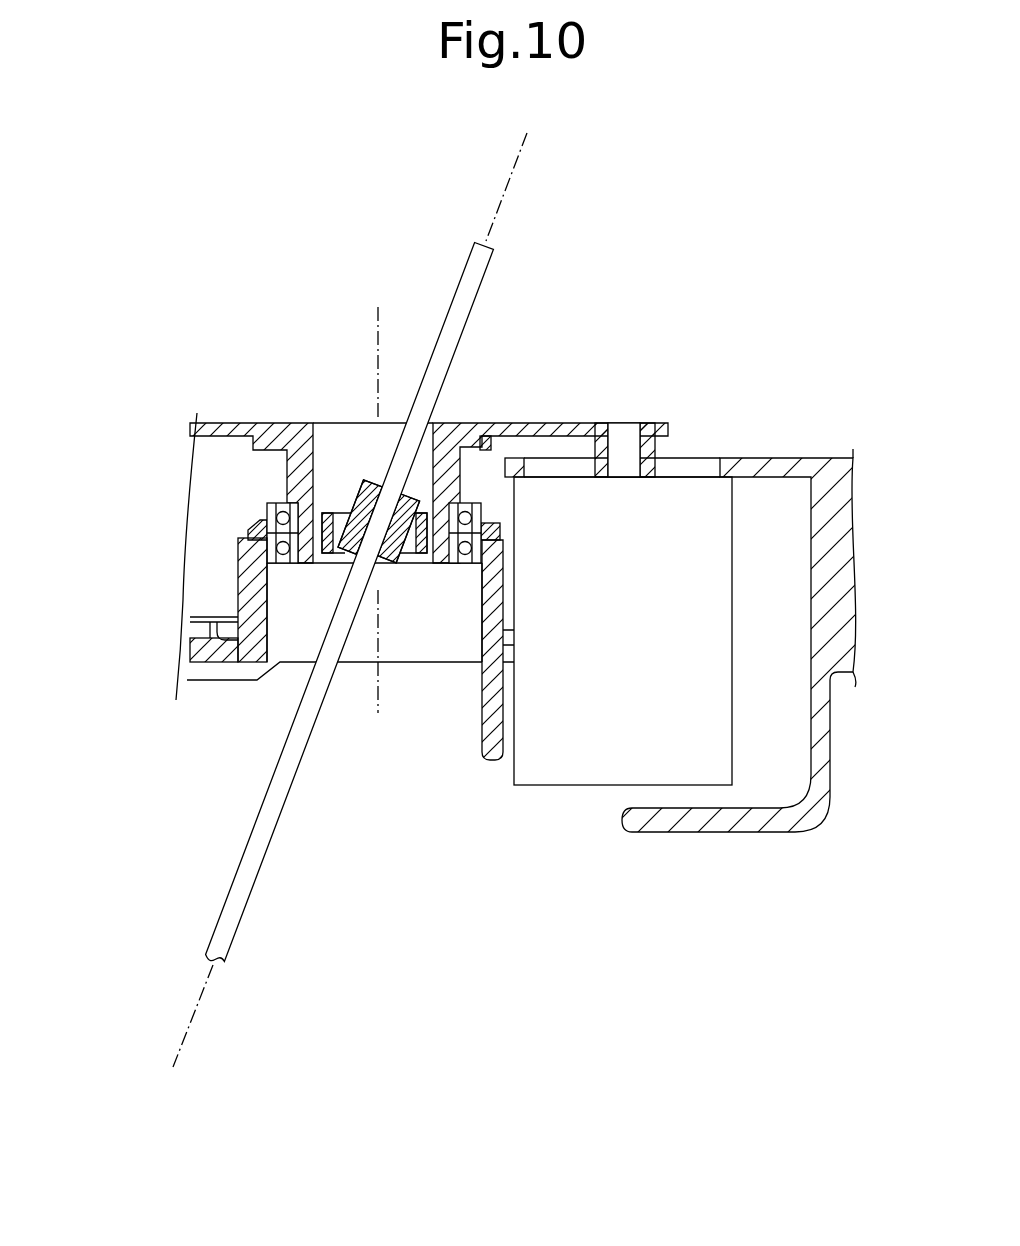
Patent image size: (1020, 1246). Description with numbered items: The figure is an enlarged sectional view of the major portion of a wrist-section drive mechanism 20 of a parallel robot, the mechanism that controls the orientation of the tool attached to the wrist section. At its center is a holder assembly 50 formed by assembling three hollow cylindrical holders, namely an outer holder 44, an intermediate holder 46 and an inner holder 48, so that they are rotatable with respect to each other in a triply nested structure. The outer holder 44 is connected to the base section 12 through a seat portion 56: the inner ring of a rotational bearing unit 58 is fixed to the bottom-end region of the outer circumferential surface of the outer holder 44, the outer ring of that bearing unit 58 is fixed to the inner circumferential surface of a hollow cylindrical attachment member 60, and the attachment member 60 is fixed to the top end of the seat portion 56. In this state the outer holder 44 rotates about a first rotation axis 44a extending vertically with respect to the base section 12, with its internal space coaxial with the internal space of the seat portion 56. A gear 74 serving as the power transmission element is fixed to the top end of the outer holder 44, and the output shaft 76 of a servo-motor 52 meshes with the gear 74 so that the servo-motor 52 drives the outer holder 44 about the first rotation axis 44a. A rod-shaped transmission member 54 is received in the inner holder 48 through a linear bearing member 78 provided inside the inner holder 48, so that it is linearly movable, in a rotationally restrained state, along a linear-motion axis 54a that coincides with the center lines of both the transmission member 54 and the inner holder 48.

The base section 12 is at (236, 666).
The wrist-section drive mechanism 20 is at (184, 322).
The outer holder 44 is at (326, 422).
The first rotation axis 44a is at (378, 713).
The holder 46 is at (330, 512).
The inner holder 48 is at (368, 479).
The holder assembly 50 is at (299, 418).
The servo-motor 52 is at (567, 786).
The transmission member 54 is at (258, 826).
The linear-motion axis 54a is at (212, 1050).
The seat portion 56 is at (247, 580).
The rotational bearing unit 58 is at (284, 502).
The attachment member 60 is at (265, 523).
The gear 74 is at (538, 422).
The output shaft 76 is at (621, 423).
The linear bearing member 78 is at (462, 422).